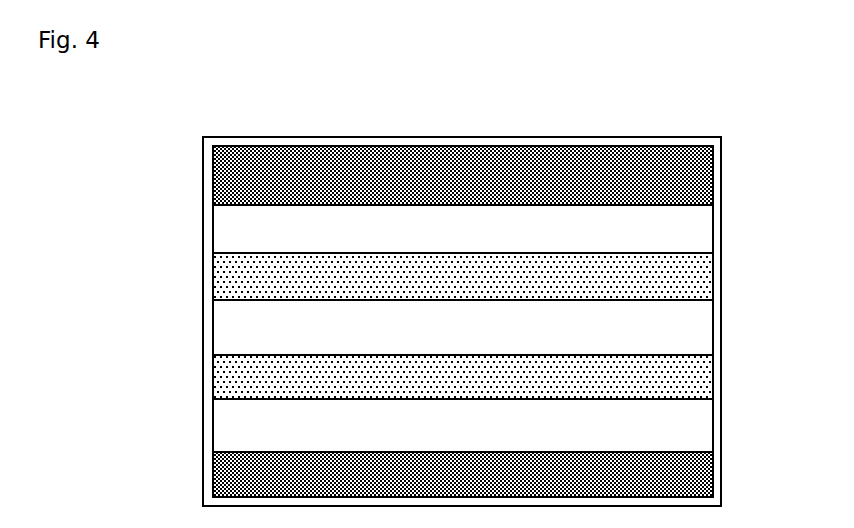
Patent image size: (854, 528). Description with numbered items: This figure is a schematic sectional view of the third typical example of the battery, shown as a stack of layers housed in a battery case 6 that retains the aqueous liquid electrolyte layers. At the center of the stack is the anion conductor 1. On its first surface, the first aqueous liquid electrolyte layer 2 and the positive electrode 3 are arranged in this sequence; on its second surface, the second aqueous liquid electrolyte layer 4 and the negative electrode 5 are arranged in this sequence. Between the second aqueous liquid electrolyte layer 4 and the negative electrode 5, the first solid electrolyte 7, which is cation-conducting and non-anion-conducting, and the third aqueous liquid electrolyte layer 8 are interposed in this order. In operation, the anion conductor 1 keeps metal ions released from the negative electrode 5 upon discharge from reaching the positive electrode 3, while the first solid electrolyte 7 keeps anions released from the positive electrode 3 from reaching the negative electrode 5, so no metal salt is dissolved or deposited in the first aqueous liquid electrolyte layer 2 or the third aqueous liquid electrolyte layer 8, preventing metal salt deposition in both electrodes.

The battery case 6 is at (717, 145).
The positive electrode 3 is at (688, 183).
The first aqueous liquid electrolyte layer 2 is at (683, 235).
The anion conductor 1 is at (683, 280).
The second aqueous liquid electrolyte layer 4 is at (683, 333).
The first solid electrolyte 7 is at (688, 383).
The third aqueous liquid electrolyte layer 8 is at (690, 430).
The negative electrode 5 is at (690, 478).